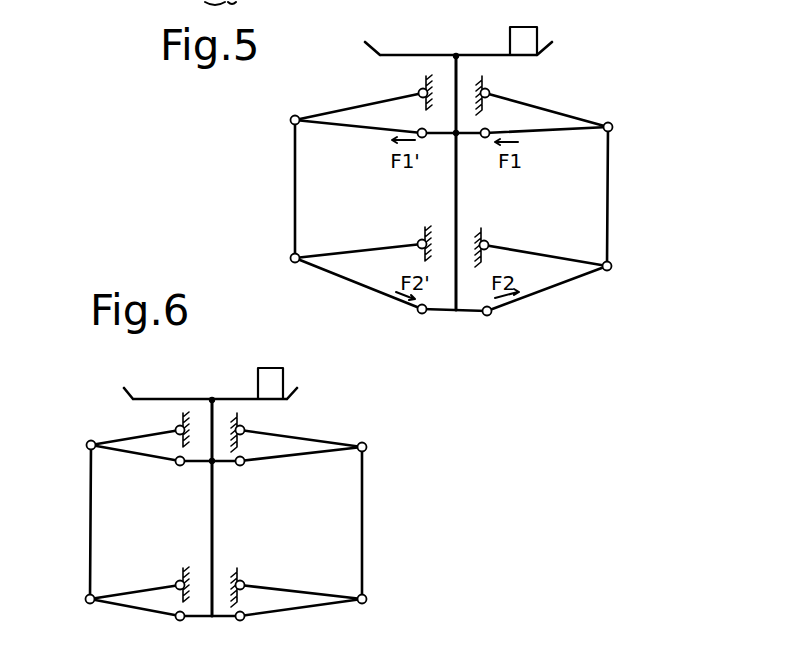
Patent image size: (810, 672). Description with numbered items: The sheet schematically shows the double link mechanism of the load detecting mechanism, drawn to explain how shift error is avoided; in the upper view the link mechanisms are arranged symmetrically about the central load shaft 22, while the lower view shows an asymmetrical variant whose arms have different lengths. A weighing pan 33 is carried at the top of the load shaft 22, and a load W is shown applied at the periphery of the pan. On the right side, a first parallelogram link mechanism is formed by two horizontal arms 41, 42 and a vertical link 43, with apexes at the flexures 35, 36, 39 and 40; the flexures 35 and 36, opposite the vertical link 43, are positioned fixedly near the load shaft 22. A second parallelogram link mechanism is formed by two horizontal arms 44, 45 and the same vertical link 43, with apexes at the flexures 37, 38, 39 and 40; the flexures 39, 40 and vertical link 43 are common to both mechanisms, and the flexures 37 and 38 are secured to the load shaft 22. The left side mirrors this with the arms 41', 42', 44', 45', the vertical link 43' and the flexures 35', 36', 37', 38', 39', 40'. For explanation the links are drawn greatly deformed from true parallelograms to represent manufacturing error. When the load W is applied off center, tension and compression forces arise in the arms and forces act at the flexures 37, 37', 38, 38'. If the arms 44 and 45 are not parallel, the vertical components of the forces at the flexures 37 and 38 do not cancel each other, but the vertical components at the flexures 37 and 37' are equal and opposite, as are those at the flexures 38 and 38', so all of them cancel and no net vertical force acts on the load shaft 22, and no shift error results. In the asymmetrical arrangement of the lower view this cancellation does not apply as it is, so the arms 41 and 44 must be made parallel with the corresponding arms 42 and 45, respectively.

In FIG. 5, the load shaft 22 is at (457, 298).
In FIG. 6, the load shaft 22 is at (214, 600).
In FIG. 5, the weighing pan 33 is at (410, 54).
In FIG. 6, the weighing pan 33 is at (180, 398).
In FIG. 5, the load W is at (522, 27).
In FIG. 6, the load W is at (272, 368).
In FIG. 5, the flexure 35 is at (538, 74).
In FIG. 6, the flexure 35 is at (292, 412).
In FIG. 5, the flexure 35' is at (367, 68).
In FIG. 6, the flexure 35' is at (142, 396).
In FIG. 5, the flexure 36 is at (571, 231).
In FIG. 6, the flexure 36 is at (329, 574).
In FIG. 5, the flexure 36' is at (332, 263).
In FIG. 6, the flexure 36' is at (107, 577).
In FIG. 5, the flexure 37 is at (526, 100).
In FIG. 6, the flexure 37 is at (312, 489).
In FIG. 5, the flexure 37' is at (384, 94).
In FIG. 6, the flexure 37' is at (117, 490).
In FIG. 5, the flexure 38 is at (514, 332).
In FIG. 6, the flexure 38 is at (268, 639).
In FIG. 5, the flexure 38' is at (419, 336).
In FIG. 6, the flexure 38' is at (182, 642).
In FIG. 5, the flexure 39 is at (640, 118).
In FIG. 6, the flexure 39 is at (399, 440).
In FIG. 5, the flexure 39' is at (259, 118).
In FIG. 6, the flexure 39' is at (58, 431).
In FIG. 5, the flexure 40 is at (634, 281).
In FIG. 6, the flexure 40 is at (393, 616).
In FIG. 5, the flexure 40' is at (254, 250).
In FIG. 6, the flexure 40' is at (54, 602).
In FIG. 5, the horizontal arm 41 is at (562, 103).
In FIG. 6, the horizontal arm 41 is at (309, 424).
In FIG. 5, the horizontal arm 41' is at (349, 95).
In FIG. 6, the horizontal arm 41' is at (116, 412).
In FIG. 5, the horizontal arm 42 is at (576, 249).
In FIG. 6, the horizontal arm 42 is at (334, 590).
In FIG. 5, the horizontal arm 42' is at (358, 299).
In FIG. 6, the horizontal arm 42' is at (120, 620).
In FIG. 5, the vertical link 43 is at (637, 196).
In FIG. 6, the vertical link 43 is at (395, 523).
In FIG. 5, the vertical link 43' is at (256, 189).
In FIG. 6, the vertical link 43' is at (59, 522).
In FIG. 5, the horizontal arm 44 is at (579, 146).
In FIG. 6, the horizontal arm 44 is at (329, 468).
In FIG. 5, the horizontal arm 44' is at (327, 146).
In FIG. 6, the horizontal arm 44' is at (106, 465).
In FIG. 5, the horizontal arm 45 is at (547, 299).
In FIG. 6, the horizontal arm 45 is at (301, 625).
In FIG. 5, the horizontal arm 45' is at (357, 291).
In FIG. 6, the horizontal arm 45' is at (135, 633).